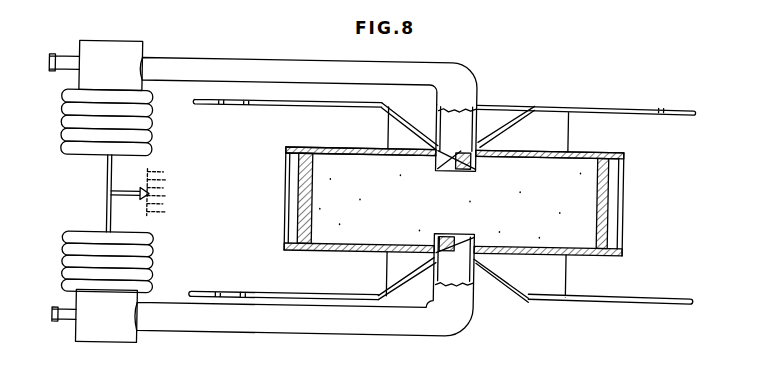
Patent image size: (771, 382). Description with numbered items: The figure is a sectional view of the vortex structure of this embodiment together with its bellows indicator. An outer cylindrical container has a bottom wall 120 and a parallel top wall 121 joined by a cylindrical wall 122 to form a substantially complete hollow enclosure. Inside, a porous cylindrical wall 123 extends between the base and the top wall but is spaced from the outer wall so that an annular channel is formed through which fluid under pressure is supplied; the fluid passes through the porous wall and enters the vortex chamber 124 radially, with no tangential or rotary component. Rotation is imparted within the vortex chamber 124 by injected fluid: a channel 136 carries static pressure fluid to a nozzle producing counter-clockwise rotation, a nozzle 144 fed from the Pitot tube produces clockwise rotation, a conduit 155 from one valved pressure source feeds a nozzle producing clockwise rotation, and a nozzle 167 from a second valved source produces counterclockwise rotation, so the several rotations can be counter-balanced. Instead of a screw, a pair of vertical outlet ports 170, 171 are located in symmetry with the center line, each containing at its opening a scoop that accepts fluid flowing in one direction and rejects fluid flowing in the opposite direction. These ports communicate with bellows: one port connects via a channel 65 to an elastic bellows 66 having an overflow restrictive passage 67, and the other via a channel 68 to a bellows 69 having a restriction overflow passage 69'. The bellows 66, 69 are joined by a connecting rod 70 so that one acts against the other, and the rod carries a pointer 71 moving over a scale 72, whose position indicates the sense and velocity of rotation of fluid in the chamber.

The channel 65 is at (165, 330).
The elastic bellows 66 is at (153, 268).
The restrictive passage 67 is at (62, 322).
The channel 68 is at (152, 72).
The bellows 69 is at (131, 122).
The restriction overflow passage 69' is at (63, 43).
The connecting rod 70 is at (107, 207).
The pointer 71 is at (120, 193).
The scale 72 is at (163, 192).
The bottom wall 120 is at (592, 258).
The top wall 121 is at (588, 153).
The cylindrical wall 122 is at (625, 190).
The porous cylindrical wall 123 is at (295, 225).
The vortex chamber 124 is at (399, 223).
The channel 136 is at (465, 203).
The nozzle 144 is at (572, 130).
The conduit 155 is at (410, 147).
The nozzle 167 is at (385, 127).
The outlet port 170 is at (462, 96).
The outlet port 171 is at (470, 312).